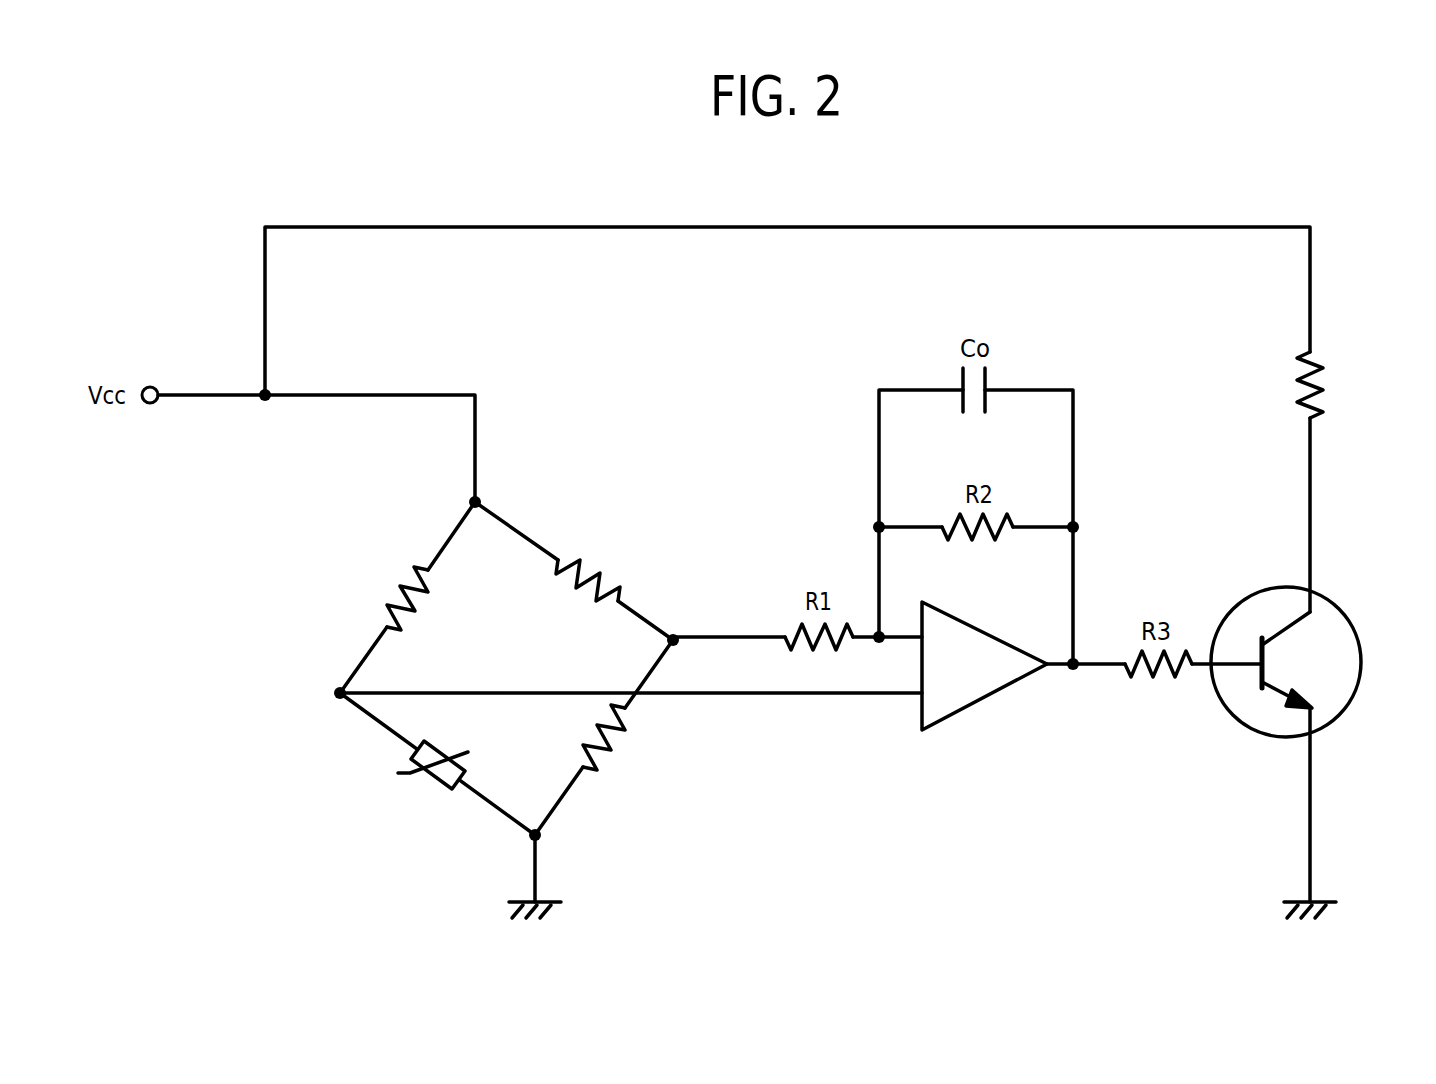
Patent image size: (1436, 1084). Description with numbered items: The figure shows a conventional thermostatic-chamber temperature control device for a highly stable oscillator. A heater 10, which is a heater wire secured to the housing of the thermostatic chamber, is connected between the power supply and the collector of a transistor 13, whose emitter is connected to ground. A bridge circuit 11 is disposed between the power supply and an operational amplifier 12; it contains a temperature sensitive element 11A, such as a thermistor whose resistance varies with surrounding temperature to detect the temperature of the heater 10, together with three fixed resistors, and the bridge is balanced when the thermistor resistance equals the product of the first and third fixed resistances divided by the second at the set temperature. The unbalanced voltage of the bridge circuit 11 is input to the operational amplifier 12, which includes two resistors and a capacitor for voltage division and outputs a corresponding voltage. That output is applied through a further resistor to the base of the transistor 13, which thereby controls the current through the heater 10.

The heater 10 is at (1327, 363).
The bridge circuit 11 is at (434, 714).
The temperature sensitive element 11A is at (438, 790).
The operational amplifier 12 is at (982, 693).
The transistor 13 is at (1327, 675).